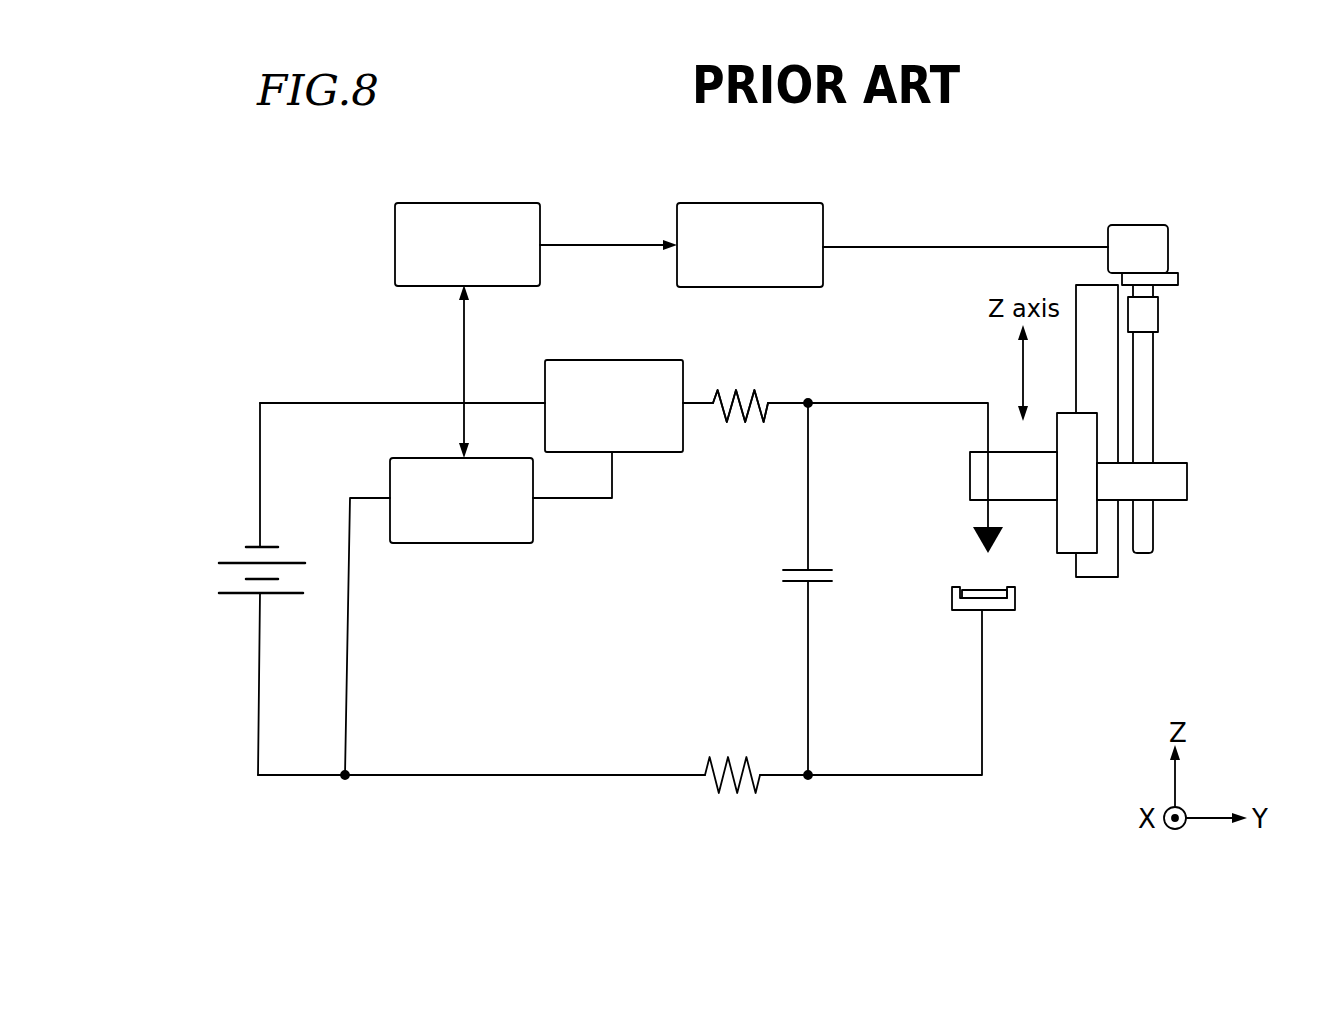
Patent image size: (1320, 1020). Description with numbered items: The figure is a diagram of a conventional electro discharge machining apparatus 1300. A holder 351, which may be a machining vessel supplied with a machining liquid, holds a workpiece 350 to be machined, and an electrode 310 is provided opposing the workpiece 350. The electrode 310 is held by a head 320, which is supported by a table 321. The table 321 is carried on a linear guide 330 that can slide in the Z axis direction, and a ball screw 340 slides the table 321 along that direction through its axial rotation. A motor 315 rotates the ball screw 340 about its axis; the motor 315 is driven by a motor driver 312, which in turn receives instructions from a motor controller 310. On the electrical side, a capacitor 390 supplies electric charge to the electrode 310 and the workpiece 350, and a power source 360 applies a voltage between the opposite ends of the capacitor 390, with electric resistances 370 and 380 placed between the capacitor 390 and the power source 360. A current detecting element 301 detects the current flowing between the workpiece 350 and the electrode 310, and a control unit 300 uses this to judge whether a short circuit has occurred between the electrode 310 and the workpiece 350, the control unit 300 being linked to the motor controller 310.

The electro discharge machining apparatus 1300 is at (1186, 108).
The electrode 310 is at (497, 202).
The motor driver 312 is at (780, 203).
The motor 315 is at (1132, 225).
The current detecting element 301 is at (628, 360).
The control unit 300 is at (390, 470).
The power source 360 is at (255, 545).
The electric resistance 380 is at (745, 420).
The capacitor 390 is at (793, 570).
The electric resistance 370 is at (738, 795).
The head 320 is at (970, 490).
The table 321 is at (1087, 517).
The ball screw 340 is at (1153, 355).
The linear guide 330 is at (1105, 365).
The workpiece 350 is at (1000, 598).
The holder 351 is at (998, 613).